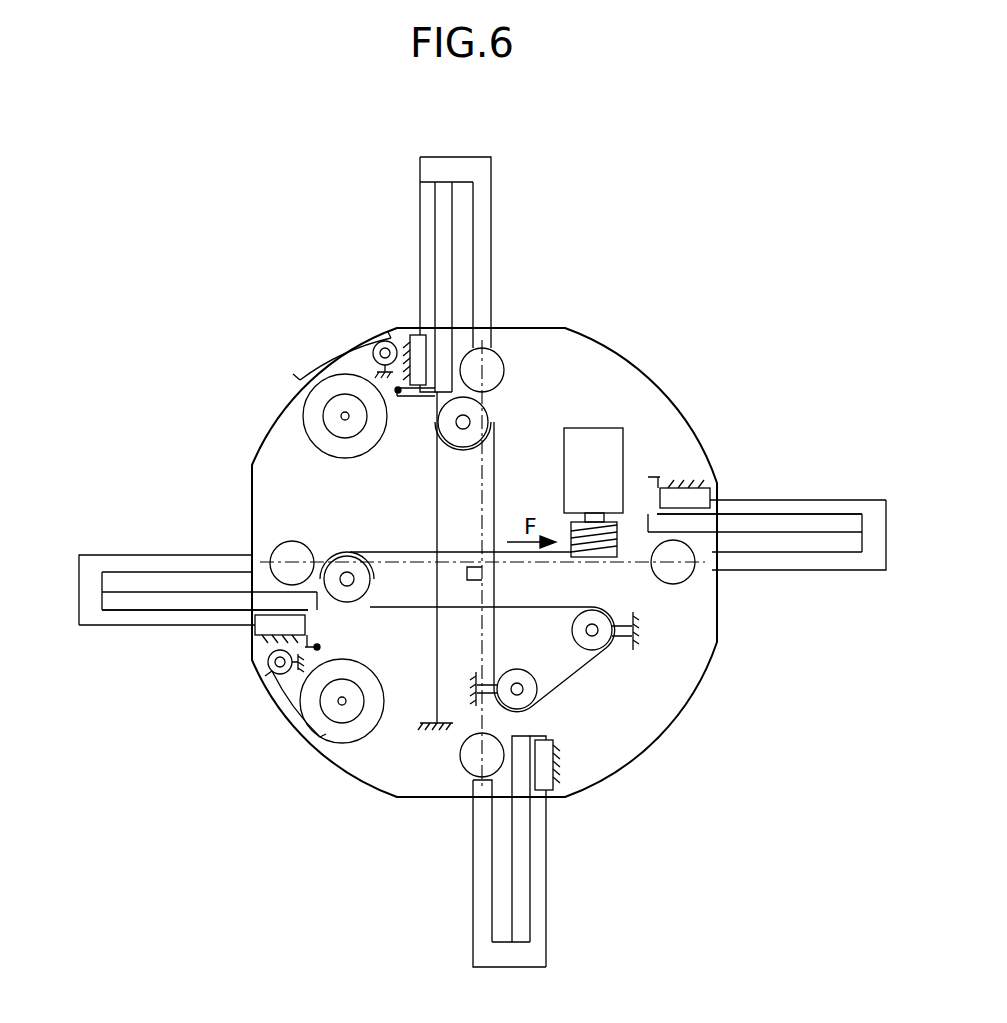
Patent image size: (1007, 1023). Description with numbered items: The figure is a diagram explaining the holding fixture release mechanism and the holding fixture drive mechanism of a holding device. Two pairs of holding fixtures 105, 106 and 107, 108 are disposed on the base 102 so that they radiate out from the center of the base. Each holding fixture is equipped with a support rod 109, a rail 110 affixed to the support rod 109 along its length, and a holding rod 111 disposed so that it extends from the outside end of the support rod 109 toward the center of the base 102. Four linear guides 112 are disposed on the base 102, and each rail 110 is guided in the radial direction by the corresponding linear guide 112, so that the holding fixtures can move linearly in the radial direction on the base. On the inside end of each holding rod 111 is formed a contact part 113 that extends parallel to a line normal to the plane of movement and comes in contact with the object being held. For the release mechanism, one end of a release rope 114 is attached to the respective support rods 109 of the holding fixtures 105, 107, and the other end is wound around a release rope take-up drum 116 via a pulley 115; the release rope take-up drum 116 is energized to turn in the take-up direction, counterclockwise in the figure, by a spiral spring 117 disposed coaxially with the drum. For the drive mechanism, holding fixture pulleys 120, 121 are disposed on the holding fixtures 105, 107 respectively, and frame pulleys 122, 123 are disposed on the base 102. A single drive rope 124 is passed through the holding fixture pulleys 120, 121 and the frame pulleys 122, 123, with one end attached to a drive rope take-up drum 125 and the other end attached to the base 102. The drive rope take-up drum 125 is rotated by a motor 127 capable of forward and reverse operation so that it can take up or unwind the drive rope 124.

The base 102 is at (627, 758).
The holding fixture 105 is at (608, 233).
The holding fixture 106 is at (352, 862).
The holding fixture 107 is at (135, 442).
The holding fixture 108 is at (818, 650).
The support rod 109 is at (437, 197).
The rail 110 is at (427, 247).
The holding rod 111 is at (483, 210).
The linear guide 112 is at (415, 336).
The contact part 113 is at (490, 360).
The release rope 114 is at (337, 365).
The pulley 115 is at (378, 355).
The release rope take-up drum 116 is at (310, 440).
The spiral spring 117 is at (342, 412).
The holding fixture pulley 120 is at (466, 424).
The holding fixture pulley 121 is at (336, 560).
The frame pulley 122 is at (540, 708).
The frame pulley 123 is at (614, 650).
The drive rope 124 is at (543, 700).
The drive rope take-up drum 125 is at (620, 535).
The motor 127 is at (588, 433).